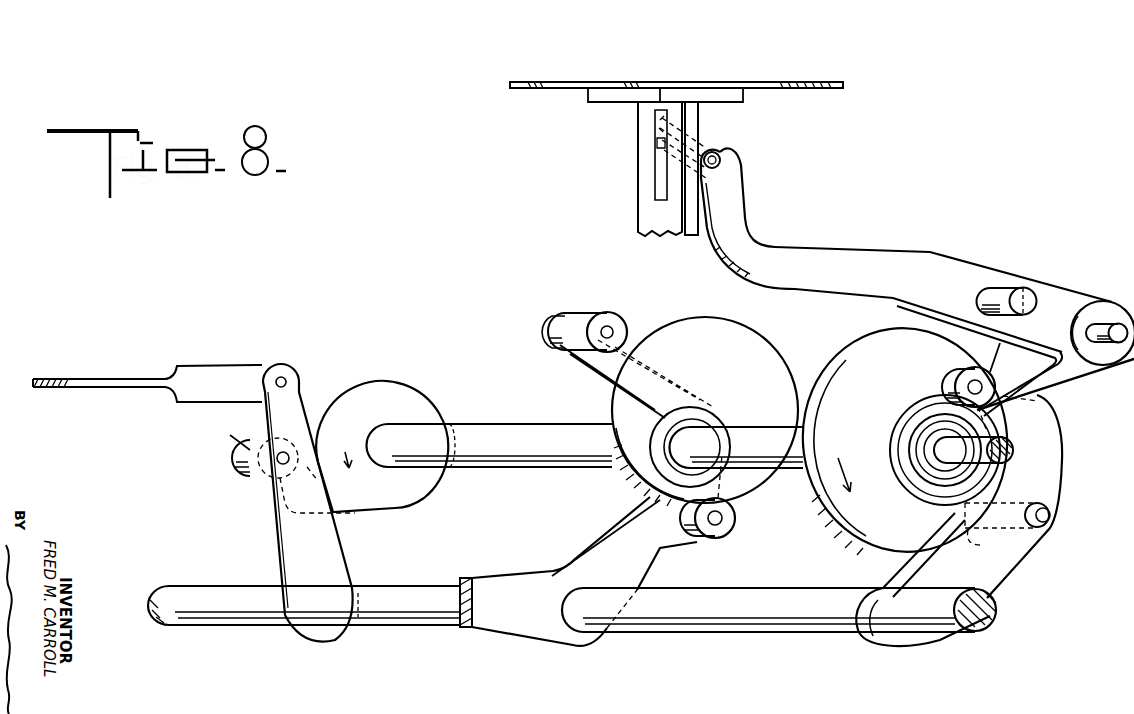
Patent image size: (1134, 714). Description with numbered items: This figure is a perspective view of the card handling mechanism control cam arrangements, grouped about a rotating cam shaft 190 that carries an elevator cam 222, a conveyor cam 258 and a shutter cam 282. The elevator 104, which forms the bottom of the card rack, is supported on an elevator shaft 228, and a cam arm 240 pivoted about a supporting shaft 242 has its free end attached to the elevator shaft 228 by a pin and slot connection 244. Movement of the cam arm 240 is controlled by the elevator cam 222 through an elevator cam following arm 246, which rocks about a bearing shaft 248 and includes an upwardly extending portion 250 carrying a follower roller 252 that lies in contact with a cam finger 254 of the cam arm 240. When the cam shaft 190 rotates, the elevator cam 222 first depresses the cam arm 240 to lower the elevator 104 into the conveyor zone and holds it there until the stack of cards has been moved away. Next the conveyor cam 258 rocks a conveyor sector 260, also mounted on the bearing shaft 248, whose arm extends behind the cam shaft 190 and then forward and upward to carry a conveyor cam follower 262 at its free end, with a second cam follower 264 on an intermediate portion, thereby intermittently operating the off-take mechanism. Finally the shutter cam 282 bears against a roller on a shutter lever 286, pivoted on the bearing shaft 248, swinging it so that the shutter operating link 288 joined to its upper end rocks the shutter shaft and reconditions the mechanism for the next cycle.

The elevator 104 is at (565, 82).
The elevator shaft 228 is at (638, 155).
The pin and slot connection 244 is at (719, 157).
The cam arm 240 is at (843, 250).
The supporting shaft 242 is at (1105, 328).
The upwardly extending portion 250 is at (1050, 391).
The cam finger 254 is at (1050, 397).
The elevator cam 222 is at (890, 343).
The follower roller 252 is at (967, 373).
The elevator cam following arm 246 is at (1060, 458).
The conveyor cam 258 is at (708, 322).
The conveyor cam follower 262 is at (603, 318).
The second cam follower 264 is at (728, 510).
The cam shaft 190 is at (515, 428).
The conveyor sector 260 is at (488, 586).
The bearing shaft 248 is at (402, 628).
The shutter lever 286 is at (290, 392).
The shutter operating link 288 is at (127, 380).
The shutter cam 282 is at (392, 383).